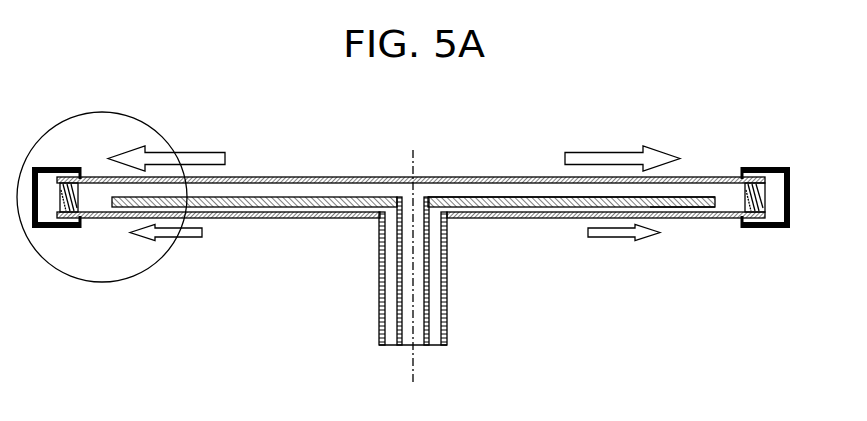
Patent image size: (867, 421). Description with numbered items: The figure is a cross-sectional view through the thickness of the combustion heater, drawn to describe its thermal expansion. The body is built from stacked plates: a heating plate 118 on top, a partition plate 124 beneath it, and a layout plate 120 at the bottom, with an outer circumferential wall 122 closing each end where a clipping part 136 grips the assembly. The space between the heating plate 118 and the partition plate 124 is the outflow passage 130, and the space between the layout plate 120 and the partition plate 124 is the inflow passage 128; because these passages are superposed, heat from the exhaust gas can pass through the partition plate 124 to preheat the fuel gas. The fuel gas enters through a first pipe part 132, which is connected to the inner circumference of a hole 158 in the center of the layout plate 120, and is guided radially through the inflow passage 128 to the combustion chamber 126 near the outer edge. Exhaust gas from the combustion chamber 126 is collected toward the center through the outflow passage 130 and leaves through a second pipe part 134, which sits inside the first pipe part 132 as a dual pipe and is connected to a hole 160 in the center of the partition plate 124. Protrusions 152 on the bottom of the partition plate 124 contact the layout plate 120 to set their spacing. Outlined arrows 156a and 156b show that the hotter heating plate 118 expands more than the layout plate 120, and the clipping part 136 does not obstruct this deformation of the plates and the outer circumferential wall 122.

The heating plate 118 is at (316, 178).
The layout plate 120 is at (313, 207).
The outer circumferential wall 122 is at (62, 193).
The partition plate 124 is at (475, 195).
The combustion chamber 126 is at (95, 205).
The inflow passage 128 is at (295, 215).
The outflow passage 130 is at (290, 190).
The first pipe part 132 is at (447, 312).
The second pipe part 134 is at (436, 347).
The clipping part 136 is at (68, 168).
The protrusion 152 is at (665, 210).
The outlined arrow 156a is at (193, 150).
The outlined arrow 156b is at (192, 242).
The hole 158 is at (384, 197).
The hole 160 is at (432, 195).